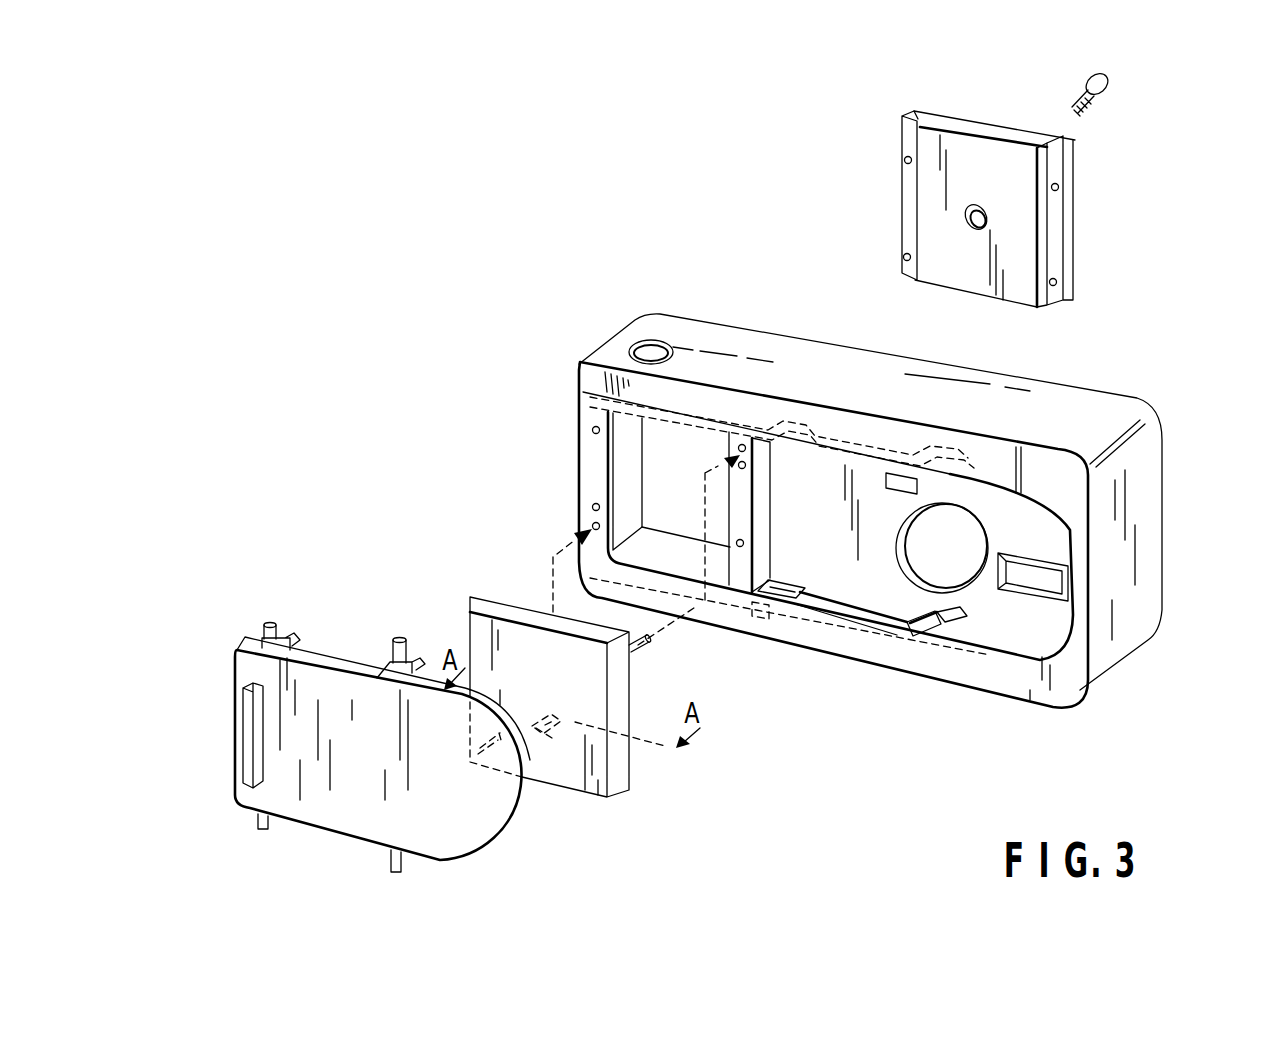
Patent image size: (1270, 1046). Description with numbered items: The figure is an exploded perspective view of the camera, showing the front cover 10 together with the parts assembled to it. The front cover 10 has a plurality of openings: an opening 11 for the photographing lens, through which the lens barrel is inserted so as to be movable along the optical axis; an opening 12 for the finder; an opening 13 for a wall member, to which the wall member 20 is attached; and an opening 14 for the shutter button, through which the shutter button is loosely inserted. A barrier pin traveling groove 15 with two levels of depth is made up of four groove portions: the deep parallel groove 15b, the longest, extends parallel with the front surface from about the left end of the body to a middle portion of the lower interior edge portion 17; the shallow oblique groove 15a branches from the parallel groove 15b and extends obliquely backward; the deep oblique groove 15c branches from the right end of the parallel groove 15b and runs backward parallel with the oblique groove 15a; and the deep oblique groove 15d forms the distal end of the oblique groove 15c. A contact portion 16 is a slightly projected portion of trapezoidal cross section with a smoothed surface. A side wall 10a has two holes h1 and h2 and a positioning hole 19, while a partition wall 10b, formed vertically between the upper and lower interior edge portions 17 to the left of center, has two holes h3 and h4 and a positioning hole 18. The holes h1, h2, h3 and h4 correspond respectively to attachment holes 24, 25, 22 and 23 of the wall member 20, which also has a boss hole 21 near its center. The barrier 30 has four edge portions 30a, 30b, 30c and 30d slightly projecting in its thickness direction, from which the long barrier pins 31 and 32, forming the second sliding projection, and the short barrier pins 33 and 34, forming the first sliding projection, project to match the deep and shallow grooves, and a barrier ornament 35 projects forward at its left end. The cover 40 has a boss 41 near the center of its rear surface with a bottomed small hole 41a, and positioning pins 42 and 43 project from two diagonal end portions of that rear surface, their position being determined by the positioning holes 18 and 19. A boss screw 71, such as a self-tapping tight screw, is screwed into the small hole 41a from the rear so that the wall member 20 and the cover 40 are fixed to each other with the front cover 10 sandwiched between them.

The front cover 10 is at (881, 494).
The side wall 10a is at (585, 460).
The partition wall 10b is at (772, 492).
The opening for the photographing lens 11 is at (970, 546).
The opening for the finder 12 is at (918, 485).
The opening for a wall member 13 is at (686, 547).
The opening for the shutter button 14 is at (648, 345).
The barrier pin traveling groove 15 is at (886, 546).
The shallow groove (oblique groove) 15a is at (775, 578).
The deep groove (parallel groove) 15b is at (868, 630).
The deep groove (oblique groove) 15c is at (928, 636).
The deep groove (oblique groove) 15d is at (963, 612).
The contact portion 16 is at (1060, 592).
The lower interior edge portion 17 is at (1000, 668).
The positioning hole 18 is at (742, 445).
The positioning hole 19 is at (592, 525).
The hole h1 is at (592, 430).
The hole h2 is at (600, 507).
The hole h3 is at (735, 463).
The hole h4 is at (744, 543).
The wall member 20 is at (993, 209).
The boss hole 21 is at (971, 231).
The attachment hole 22 is at (1060, 188).
The attachment hole 23 is at (1058, 283).
The attachment hole 24 is at (904, 160).
The attachment hole 25 is at (902, 258).
The barrier 30 is at (364, 730).
The edge portion 30a is at (385, 660).
The edge portion 30b is at (375, 832).
The edge portion 30c is at (252, 645).
The edge portion 30d is at (240, 803).
The long pin 31 is at (401, 638).
The long pin 32 is at (402, 868).
The short pin 33 is at (270, 623).
The short pin 34 is at (263, 831).
The barrier ornament 35 is at (245, 730).
The cover 40 is at (572, 723).
The boss 41 is at (550, 738).
The bottomed small hole 41a is at (553, 710).
The positioning pin 42 is at (640, 650).
The positioning pin 43 is at (490, 755).
The boss screw 71 is at (1108, 86).